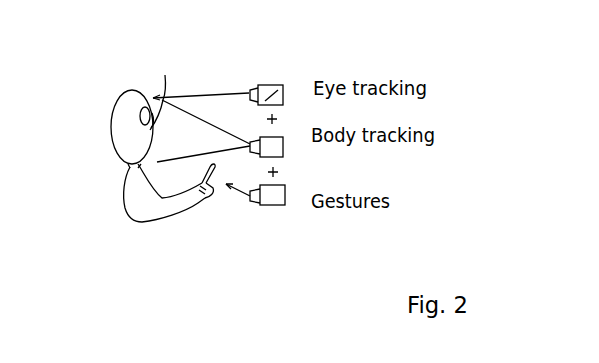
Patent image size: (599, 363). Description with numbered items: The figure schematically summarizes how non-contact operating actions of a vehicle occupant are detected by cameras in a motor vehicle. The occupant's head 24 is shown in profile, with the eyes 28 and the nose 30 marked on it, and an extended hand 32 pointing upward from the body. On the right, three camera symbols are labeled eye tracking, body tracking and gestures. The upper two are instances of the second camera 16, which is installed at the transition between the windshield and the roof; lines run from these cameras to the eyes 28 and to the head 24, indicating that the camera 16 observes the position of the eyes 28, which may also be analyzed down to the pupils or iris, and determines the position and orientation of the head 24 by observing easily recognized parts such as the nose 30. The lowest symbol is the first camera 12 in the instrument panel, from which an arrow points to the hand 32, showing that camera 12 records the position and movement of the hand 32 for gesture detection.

The first camera 12 is at (275, 202).
The second camera 16 is at (273, 85).
The head 24 is at (127, 133).
The eyes 28 is at (140, 112).
The nose 30 is at (162, 94).
The hand 32 is at (205, 202).